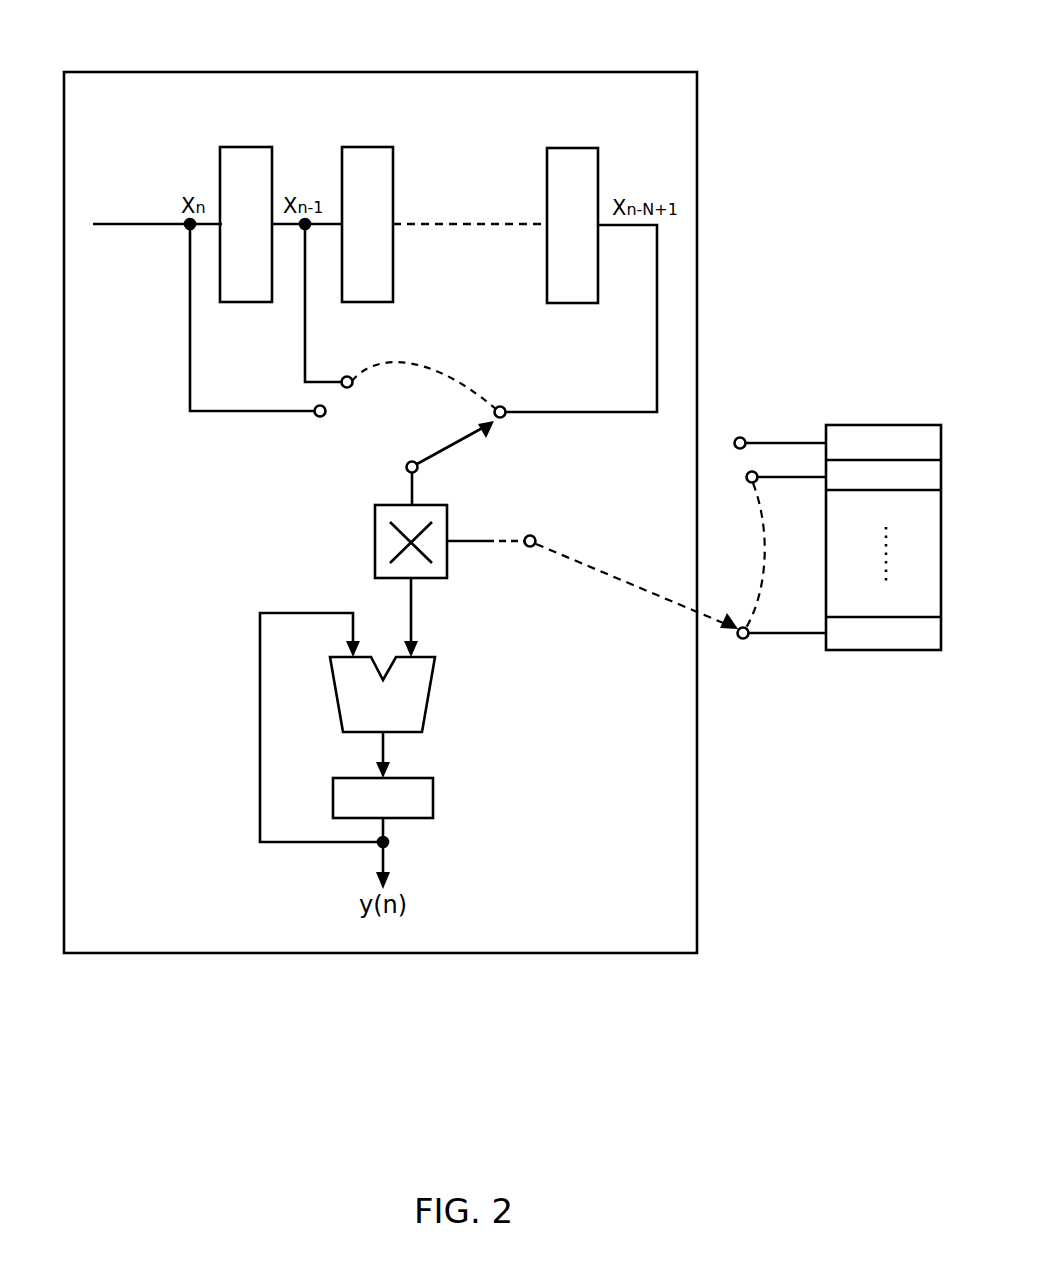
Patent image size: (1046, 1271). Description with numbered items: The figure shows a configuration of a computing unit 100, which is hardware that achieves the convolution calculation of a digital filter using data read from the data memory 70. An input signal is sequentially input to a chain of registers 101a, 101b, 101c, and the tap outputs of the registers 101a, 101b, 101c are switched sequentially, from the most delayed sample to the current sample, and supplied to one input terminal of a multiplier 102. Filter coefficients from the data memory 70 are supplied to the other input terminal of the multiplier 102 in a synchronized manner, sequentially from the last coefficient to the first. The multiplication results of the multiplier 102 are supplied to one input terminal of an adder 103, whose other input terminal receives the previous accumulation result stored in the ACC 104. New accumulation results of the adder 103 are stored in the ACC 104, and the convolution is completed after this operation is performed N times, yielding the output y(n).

The computing unit 100 is at (628, 72).
The register 101a is at (247, 147).
The register 101b is at (365, 147).
The register 101c is at (572, 148).
The multiplier 102 is at (375, 542).
The adder 103 is at (430, 695).
The ACC (Accumulator) 104 is at (433, 798).
The data memory 70 is at (885, 425).